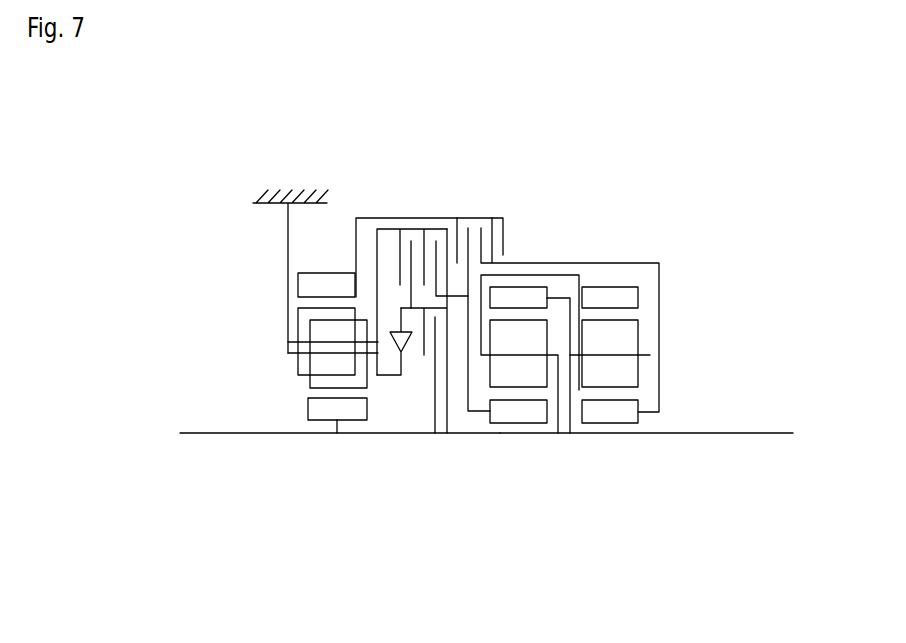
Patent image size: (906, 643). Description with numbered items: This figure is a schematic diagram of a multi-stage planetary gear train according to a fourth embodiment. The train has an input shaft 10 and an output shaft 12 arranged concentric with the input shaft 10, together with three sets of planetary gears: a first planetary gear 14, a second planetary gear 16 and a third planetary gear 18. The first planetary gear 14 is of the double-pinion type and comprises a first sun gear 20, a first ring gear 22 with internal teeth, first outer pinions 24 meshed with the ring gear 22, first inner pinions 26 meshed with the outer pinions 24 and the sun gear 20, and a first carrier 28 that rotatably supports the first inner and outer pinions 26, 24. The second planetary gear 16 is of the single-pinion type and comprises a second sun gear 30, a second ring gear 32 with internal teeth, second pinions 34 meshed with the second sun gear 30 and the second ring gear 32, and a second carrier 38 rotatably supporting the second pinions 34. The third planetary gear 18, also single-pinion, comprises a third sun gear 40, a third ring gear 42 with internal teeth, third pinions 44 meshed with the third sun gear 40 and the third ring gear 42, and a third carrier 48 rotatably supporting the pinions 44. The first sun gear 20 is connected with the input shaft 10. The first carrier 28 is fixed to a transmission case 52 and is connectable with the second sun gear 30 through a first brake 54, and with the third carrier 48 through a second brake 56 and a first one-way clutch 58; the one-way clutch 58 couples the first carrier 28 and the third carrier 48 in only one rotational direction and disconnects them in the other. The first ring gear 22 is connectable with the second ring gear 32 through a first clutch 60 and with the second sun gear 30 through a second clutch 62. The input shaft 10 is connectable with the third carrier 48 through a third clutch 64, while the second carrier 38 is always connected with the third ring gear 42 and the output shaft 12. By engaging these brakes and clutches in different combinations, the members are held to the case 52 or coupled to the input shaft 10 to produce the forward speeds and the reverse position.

The input shaft 10 is at (220, 432).
The output shaft 12 is at (742, 433).
The first planetary gear 14 is at (297, 462).
The second planetary gear 16 is at (538, 467).
The third planetary gear 18 is at (642, 457).
The first sun gear 20 is at (330, 412).
The first ring gear 22 is at (317, 287).
The first outer pinions 24 is at (303, 328).
The first inner pinions 26 is at (317, 382).
The first carrier 28 is at (300, 352).
The second sun gear 30 is at (512, 413).
The second ring gear 32 is at (517, 293).
The second pinions 34 is at (543, 337).
The second carrier 38 is at (557, 357).
The third sun gear 40 is at (610, 412).
The third ring gear 42 is at (610, 298).
The third pinions 44 is at (622, 338).
The third carrier 48 is at (650, 354).
The transmission case 52 is at (278, 191).
The first brake 54 is at (440, 242).
The second brake 56 is at (408, 242).
The first one-way clutch 58 is at (401, 352).
The first clutch 60 is at (497, 242).
The second clutch 62 is at (470, 238).
The third clutch 64 is at (440, 340).